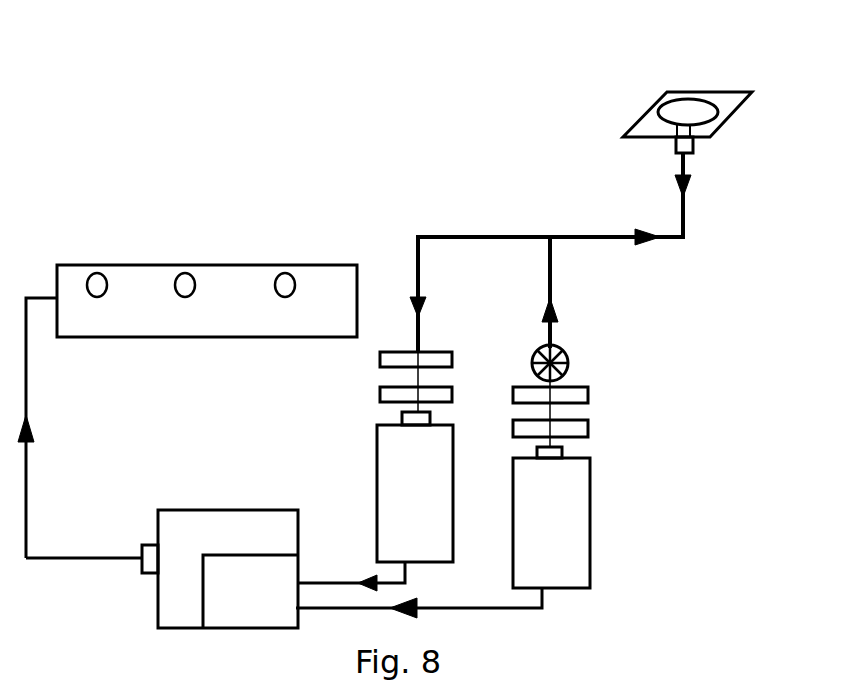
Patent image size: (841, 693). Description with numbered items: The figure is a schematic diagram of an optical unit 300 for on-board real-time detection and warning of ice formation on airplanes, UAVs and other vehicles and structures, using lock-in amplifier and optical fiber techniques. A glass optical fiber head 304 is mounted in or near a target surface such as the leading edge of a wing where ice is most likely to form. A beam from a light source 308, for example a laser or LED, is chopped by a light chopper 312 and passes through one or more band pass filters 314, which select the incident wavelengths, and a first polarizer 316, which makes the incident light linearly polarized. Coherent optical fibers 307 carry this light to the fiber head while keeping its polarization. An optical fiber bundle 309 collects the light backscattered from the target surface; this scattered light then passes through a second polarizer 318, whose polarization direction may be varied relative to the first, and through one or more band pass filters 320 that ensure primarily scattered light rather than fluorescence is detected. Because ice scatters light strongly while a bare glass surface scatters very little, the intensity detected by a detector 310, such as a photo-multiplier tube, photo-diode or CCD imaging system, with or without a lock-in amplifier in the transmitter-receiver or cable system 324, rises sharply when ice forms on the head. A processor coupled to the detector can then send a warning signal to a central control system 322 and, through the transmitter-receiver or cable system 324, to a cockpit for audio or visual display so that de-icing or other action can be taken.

The optical unit 300 is at (405, 149).
The wafer / substrate 304 is at (707, 92).
The coherent optical fibers 307 is at (552, 285).
The light source 308 is at (590, 548).
The optical fiber bundle 309 is at (480, 237).
The detector 310 is at (377, 473).
The light chopper 312 is at (572, 358).
The band pass filters 314 is at (588, 428).
The polarizer 316 is at (588, 395).
The polarizer 318 is at (380, 358).
The band pass filters 320 is at (380, 395).
The central control system 322 is at (167, 265).
The transmitter-receiver or cable system 324 is at (167, 510).